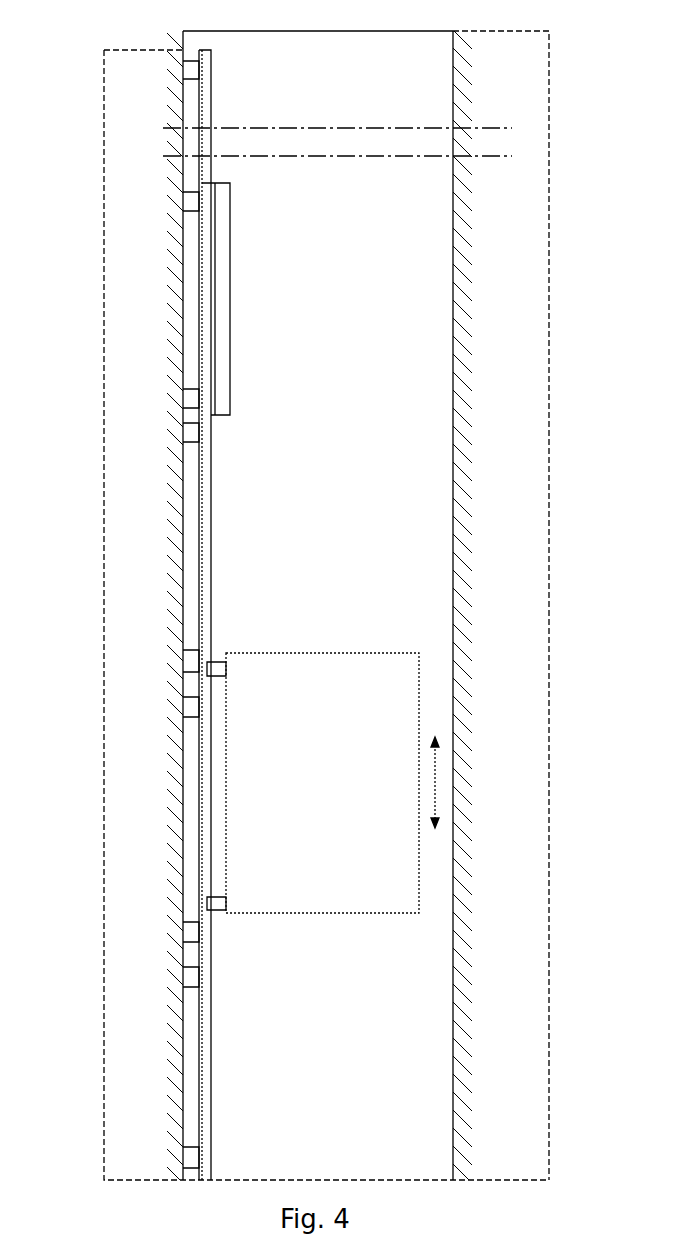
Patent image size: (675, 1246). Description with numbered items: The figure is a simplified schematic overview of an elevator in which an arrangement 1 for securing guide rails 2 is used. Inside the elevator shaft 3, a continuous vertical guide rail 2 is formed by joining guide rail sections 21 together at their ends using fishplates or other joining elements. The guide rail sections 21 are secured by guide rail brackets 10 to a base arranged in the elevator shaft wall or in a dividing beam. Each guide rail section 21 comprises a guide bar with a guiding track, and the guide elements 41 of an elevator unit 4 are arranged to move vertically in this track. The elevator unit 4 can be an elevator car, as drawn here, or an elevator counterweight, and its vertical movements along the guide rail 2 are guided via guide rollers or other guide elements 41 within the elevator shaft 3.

The arrangement for securing guide rails 1 is at (265, 425).
The guide rail 2 is at (103, 661).
The elevator shaft 3 is at (550, 552).
The elevator unit 4 is at (320, 822).
The guide rail bracket 10 is at (192, 435).
The guide rail section 21 is at (230, 292).
The guide element 41 is at (218, 910).